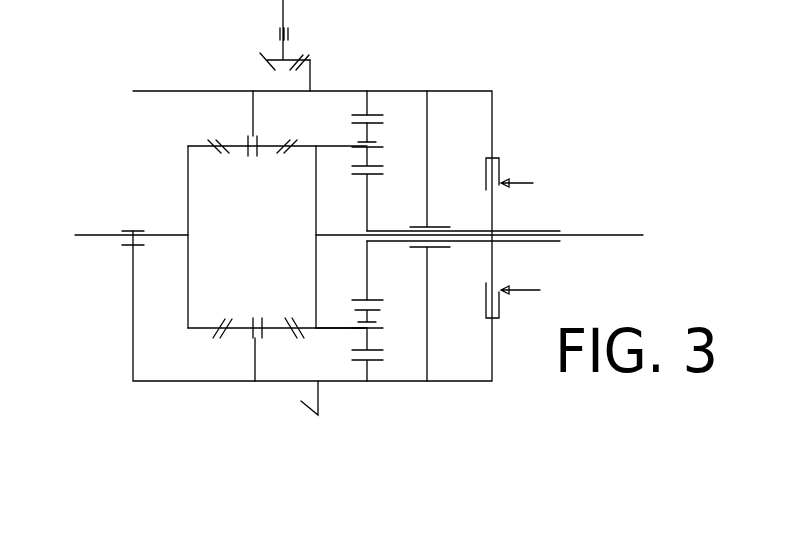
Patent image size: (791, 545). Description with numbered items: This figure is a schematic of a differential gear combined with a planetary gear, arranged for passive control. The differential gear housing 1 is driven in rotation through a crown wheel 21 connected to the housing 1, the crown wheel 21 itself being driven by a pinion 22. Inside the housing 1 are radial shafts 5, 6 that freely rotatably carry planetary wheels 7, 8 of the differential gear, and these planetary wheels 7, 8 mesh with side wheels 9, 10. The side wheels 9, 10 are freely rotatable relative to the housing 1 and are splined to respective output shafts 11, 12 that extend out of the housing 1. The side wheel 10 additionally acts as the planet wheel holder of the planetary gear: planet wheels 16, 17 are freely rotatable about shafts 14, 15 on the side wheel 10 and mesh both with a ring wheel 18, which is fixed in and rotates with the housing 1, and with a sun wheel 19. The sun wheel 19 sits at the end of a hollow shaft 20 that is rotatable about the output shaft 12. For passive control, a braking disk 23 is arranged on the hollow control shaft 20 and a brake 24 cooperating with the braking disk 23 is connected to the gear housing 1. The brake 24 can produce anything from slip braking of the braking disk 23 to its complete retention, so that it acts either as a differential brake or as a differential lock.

The housing 1 is at (151, 91).
The radial shaft 5 is at (253, 116).
The radial shaft 6 is at (256, 352).
The planetary wheel 7 is at (237, 152).
The planetary wheel 8 is at (275, 324).
The side wheel 9 is at (188, 177).
The side wheel 10 is at (316, 212).
The output shaft 11 is at (105, 235).
The output shaft 12 is at (618, 237).
The shaft 14 is at (356, 147).
The shaft 15 is at (337, 327).
The planet wheel 16 is at (370, 158).
The planet wheel 17 is at (385, 340).
The ring wheel 18 is at (384, 83).
The sun wheel 19 is at (367, 212).
The hollow shaft 20 is at (532, 231).
The crown wheel 21 is at (333, 55).
The pinion 22 is at (264, 61).
The braking disk 23 is at (494, 260).
The brake 24 is at (499, 163).